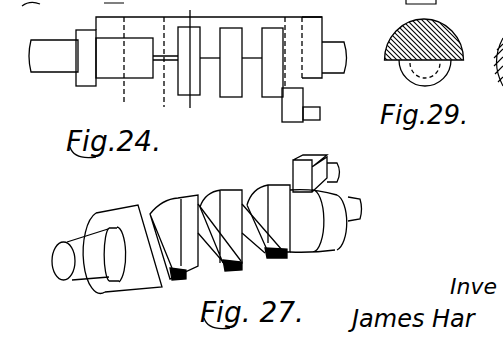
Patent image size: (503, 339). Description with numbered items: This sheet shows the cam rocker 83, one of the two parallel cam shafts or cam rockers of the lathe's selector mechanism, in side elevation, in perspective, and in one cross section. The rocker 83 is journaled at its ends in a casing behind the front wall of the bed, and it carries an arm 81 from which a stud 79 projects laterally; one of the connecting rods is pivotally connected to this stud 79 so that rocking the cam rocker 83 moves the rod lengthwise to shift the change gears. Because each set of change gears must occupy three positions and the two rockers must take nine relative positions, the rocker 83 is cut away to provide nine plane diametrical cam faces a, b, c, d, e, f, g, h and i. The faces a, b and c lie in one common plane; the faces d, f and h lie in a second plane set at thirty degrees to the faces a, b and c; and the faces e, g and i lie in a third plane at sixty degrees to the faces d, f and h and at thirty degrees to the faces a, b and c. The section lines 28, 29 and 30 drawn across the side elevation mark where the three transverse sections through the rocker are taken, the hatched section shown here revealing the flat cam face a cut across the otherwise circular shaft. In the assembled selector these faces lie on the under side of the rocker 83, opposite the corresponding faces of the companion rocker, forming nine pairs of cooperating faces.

In FIG. 24, the cam rocker 83 is at (111, 41).
In FIG. 27, the cam rocker 83 is at (122, 231).
In FIG. 24, the cam face a is at (102, 45).
In FIG. 29, the cam face a is at (443, 62).
In FIG. 27, the cam face a is at (123, 288).
In FIG. 24, the cam face b is at (120, 45).
In FIG. 27, the cam face b is at (148, 287).
In FIG. 24, the cam face c is at (138, 45).
In FIG. 27, the cam face c is at (162, 286).
In FIG. 24, the cam face d is at (164, 61).
In FIG. 27, the cam face d is at (182, 284).
In FIG. 24, the cam face e is at (190, 90).
In FIG. 27, the cam face e is at (187, 207).
In FIG. 24, the cam face f is at (210, 70).
In FIG. 27, the cam face f is at (220, 248).
In FIG. 24, the cam face g is at (233, 97).
In FIG. 27, the cam face g is at (231, 197).
In FIG. 24, the cam face h is at (252, 70).
In FIG. 27, the cam face h is at (264, 247).
In FIG. 24, the cam face i is at (258, 97).
In FIG. 27, the cam face i is at (277, 186).
In FIG. 24, the section line 28 is at (124, 103).
In FIG. 24, the section line 29 is at (164, 107).
In FIG. 24, the section line 30 is at (190, 108).
In FIG. 24, the stud 79 is at (328, 105).
In FIG. 27, the stud 79 is at (338, 164).
In FIG. 24, the arm 81 is at (287, 105).
In FIG. 27, the arm 81 is at (313, 158).